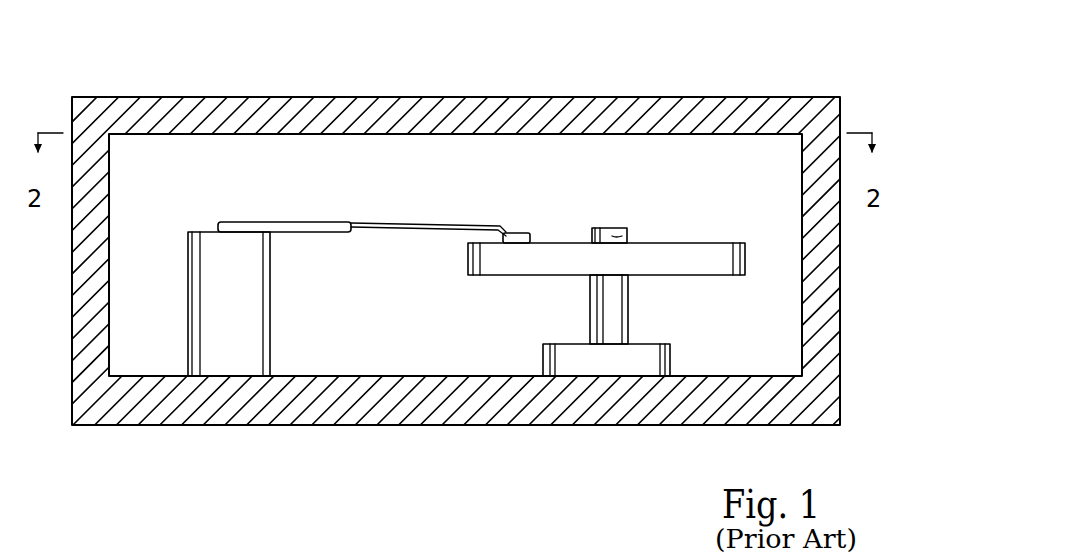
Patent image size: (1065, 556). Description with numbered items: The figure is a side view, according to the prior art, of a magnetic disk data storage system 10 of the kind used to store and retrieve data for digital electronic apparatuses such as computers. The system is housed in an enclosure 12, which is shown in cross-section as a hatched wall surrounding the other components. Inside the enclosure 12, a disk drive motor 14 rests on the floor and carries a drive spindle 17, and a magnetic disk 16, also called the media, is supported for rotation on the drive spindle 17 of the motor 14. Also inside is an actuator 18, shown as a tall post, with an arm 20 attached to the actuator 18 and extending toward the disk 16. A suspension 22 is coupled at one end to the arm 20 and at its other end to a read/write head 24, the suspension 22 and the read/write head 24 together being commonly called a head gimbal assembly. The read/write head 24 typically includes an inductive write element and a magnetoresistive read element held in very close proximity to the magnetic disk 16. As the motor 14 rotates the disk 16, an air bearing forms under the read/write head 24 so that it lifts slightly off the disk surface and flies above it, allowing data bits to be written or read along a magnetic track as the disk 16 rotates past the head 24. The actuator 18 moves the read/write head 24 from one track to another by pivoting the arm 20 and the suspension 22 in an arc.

The magnetic disk data storage system 10 is at (790, 60).
The enclosure 12 is at (440, 408).
The disk drive motor 14 is at (609, 360).
The magnetic disk 16 is at (690, 249).
The drive spindle 17 is at (622, 240).
The actuator 18 is at (253, 335).
The arm 20 is at (330, 222).
The suspension 22 is at (424, 224).
The read/write head 24 is at (528, 235).